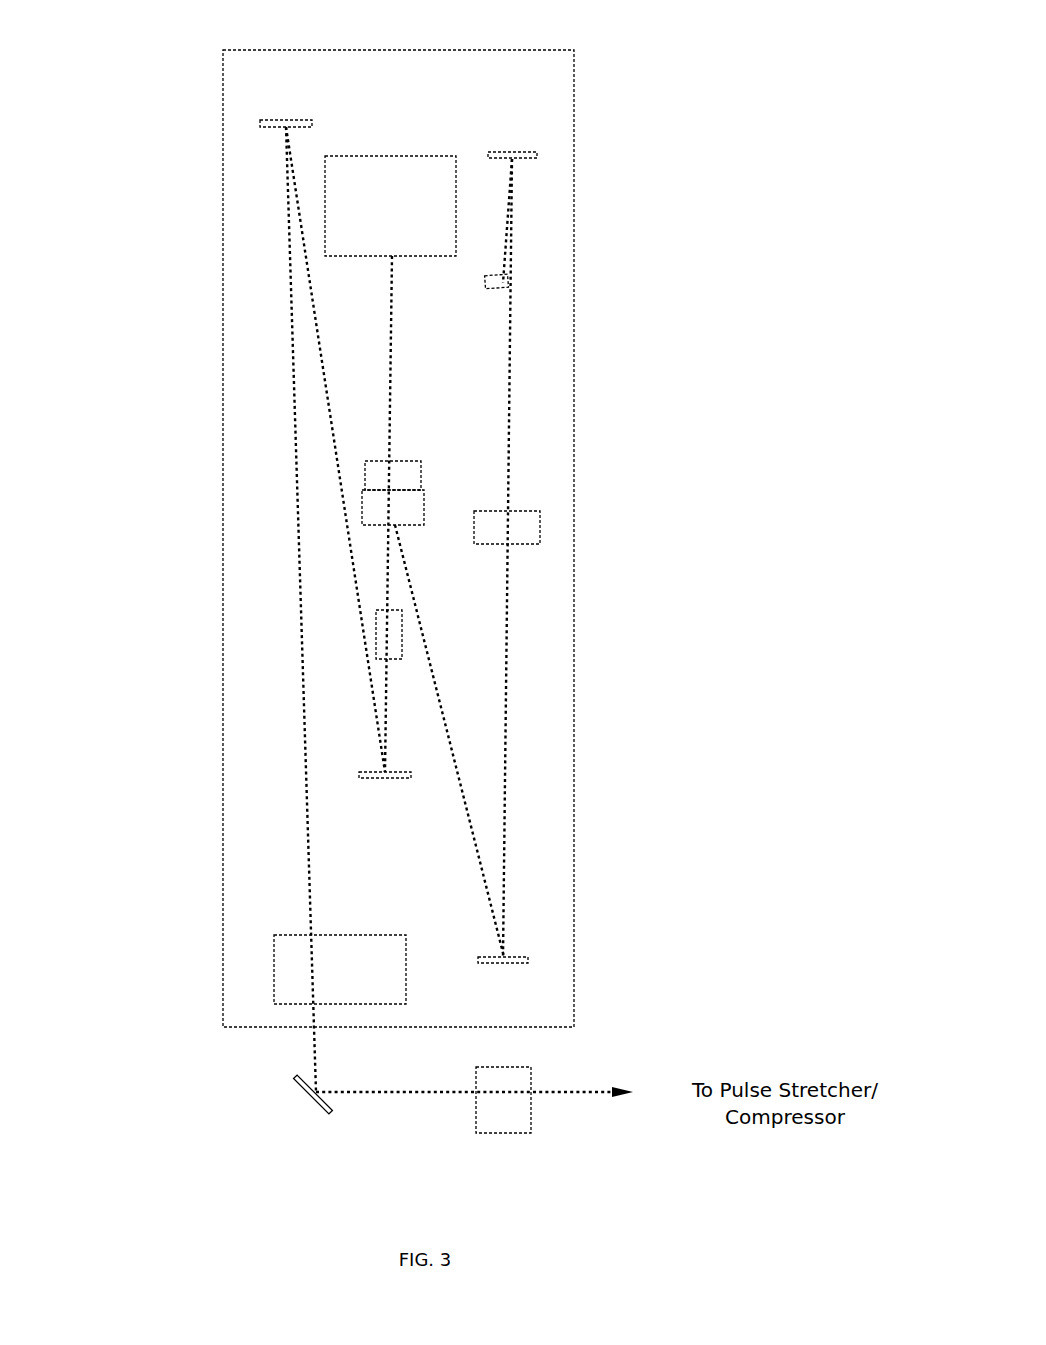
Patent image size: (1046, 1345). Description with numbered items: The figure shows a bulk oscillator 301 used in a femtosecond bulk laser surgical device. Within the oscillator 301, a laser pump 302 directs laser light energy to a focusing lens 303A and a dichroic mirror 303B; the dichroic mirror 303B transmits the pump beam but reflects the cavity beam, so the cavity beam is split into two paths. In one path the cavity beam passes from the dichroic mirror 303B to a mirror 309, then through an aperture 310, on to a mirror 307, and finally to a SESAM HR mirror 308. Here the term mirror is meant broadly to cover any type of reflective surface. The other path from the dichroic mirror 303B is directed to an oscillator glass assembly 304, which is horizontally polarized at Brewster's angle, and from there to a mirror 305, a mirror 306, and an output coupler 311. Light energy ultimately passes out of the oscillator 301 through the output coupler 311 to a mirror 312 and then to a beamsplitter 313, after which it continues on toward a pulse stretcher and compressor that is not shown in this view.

The oscillator 301 is at (162, 48).
The laser pump 302 is at (390, 206).
The focusing lens 303A is at (424, 470).
The dichroic mirror 303B is at (376, 527).
The oscillator glass assembly 304 is at (402, 661).
The mirror 305 is at (385, 790).
The mirror 306 is at (286, 108).
The mirror 307 is at (515, 132).
The SESAM HR mirror 308 is at (496, 293).
The mirror 309 is at (503, 975).
The aperture 310 is at (522, 545).
The output coupler 311 is at (272, 956).
The mirror 312 is at (297, 1103).
The beamsplitter 313 is at (503, 1123).